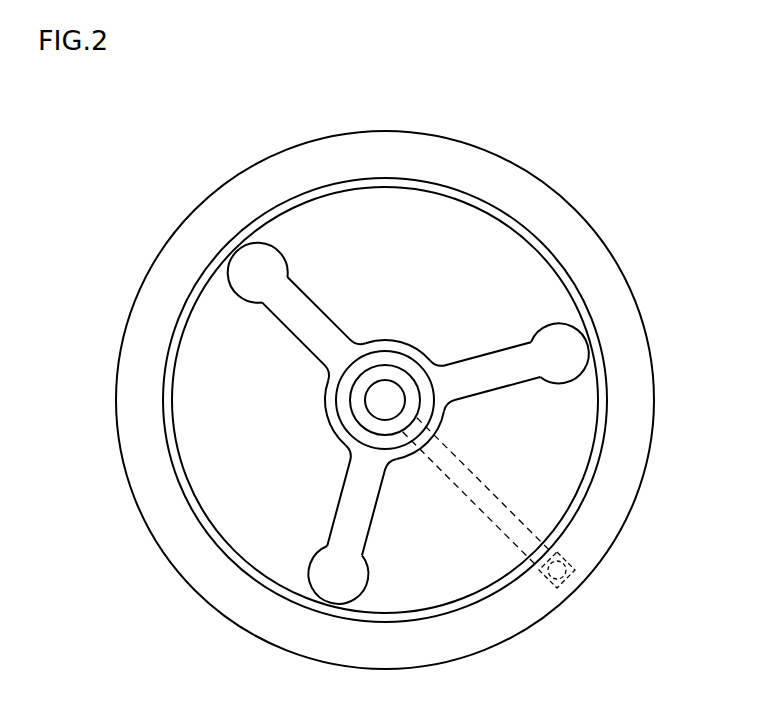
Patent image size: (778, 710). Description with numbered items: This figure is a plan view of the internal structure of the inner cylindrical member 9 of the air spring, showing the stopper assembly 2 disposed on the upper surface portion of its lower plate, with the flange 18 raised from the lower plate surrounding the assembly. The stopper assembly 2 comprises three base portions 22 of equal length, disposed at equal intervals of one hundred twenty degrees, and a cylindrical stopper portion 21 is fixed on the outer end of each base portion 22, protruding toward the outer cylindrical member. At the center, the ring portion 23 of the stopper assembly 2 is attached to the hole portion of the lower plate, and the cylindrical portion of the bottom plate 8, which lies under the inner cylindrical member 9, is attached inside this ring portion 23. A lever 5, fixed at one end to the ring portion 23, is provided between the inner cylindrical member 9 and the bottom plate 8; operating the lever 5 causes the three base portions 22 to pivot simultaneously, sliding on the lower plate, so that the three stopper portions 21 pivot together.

The stopper assembly 2 is at (408, 329).
The stopper portion 21 is at (260, 258).
The base portion 22 is at (307, 312).
The ring portion 23 is at (376, 356).
The inner cylindrical member 9 is at (627, 343).
The flange 18 is at (207, 534).
The bottom plate 8 is at (415, 399).
The lever 5 is at (540, 573).